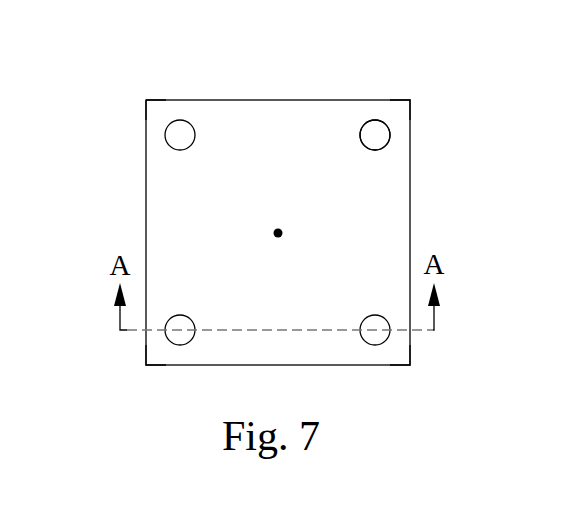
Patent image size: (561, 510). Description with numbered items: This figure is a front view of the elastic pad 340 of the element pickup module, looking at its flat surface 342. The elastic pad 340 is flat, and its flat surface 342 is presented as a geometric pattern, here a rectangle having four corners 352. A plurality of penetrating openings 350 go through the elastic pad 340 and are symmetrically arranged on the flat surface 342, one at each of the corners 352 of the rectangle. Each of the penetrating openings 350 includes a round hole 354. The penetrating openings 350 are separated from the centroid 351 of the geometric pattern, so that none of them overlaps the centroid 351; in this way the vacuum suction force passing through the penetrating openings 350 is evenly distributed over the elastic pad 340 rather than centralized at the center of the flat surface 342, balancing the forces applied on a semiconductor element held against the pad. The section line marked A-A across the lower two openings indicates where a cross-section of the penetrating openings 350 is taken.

The elastic pad 340 is at (397, 86).
The flat surface 342 is at (168, 190).
The penetrating openings 350 is at (150, 130).
The centroid 351 is at (278, 233).
The corners 352 is at (146, 100).
The round hole 354 is at (380, 136).